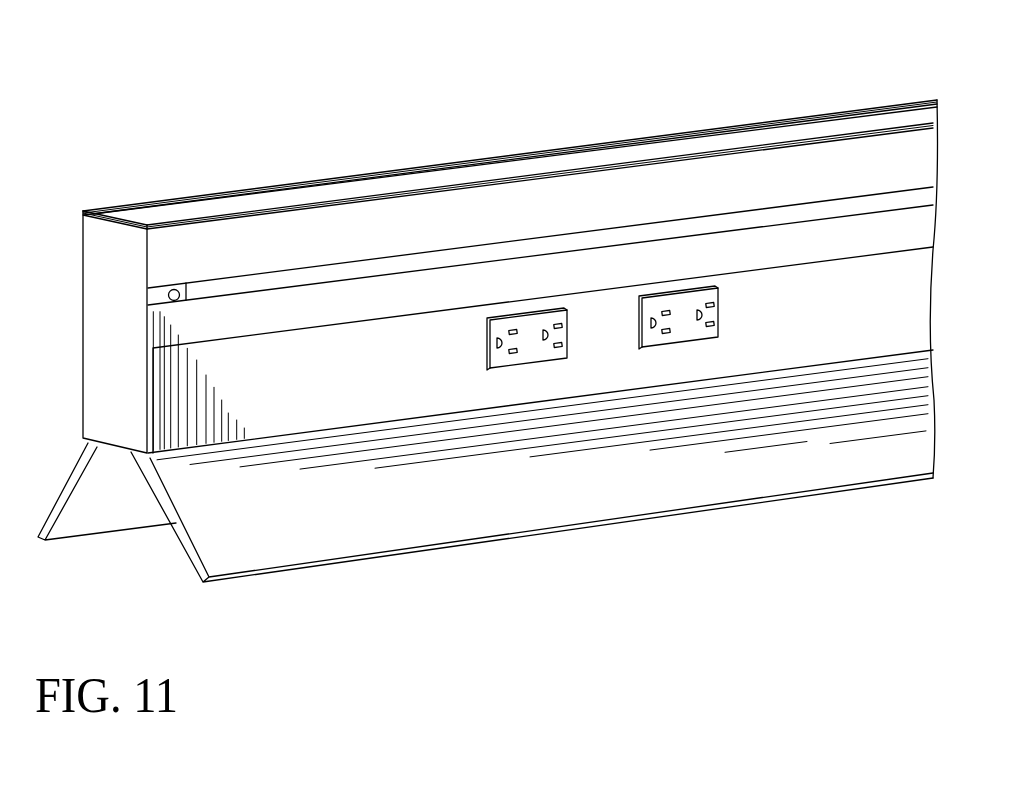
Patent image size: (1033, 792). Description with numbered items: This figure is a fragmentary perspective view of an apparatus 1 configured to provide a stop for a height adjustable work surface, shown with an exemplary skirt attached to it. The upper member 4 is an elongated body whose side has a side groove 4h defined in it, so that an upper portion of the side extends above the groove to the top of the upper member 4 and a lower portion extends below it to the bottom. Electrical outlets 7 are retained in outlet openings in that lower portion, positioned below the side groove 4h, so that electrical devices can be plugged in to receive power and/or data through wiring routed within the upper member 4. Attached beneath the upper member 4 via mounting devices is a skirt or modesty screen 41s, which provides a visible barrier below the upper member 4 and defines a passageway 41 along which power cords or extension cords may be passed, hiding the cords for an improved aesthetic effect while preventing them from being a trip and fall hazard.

The power strip assembly 1 is at (290, 115).
The upper member 4 is at (568, 193).
The side groove 4h is at (502, 252).
The electrical outlet 7 is at (692, 297).
The passageway 41 is at (135, 538).
The modesty screen 41s is at (180, 577).